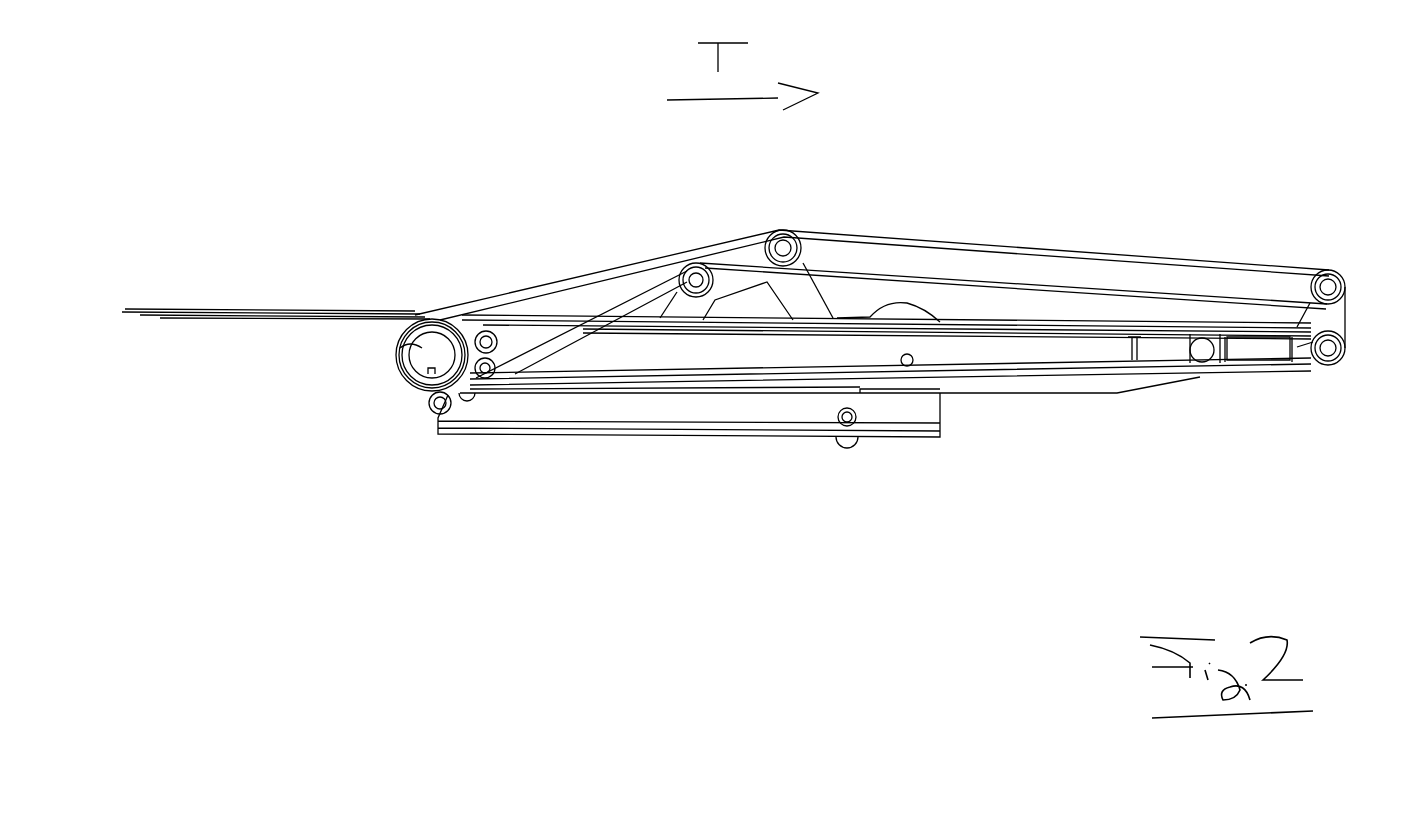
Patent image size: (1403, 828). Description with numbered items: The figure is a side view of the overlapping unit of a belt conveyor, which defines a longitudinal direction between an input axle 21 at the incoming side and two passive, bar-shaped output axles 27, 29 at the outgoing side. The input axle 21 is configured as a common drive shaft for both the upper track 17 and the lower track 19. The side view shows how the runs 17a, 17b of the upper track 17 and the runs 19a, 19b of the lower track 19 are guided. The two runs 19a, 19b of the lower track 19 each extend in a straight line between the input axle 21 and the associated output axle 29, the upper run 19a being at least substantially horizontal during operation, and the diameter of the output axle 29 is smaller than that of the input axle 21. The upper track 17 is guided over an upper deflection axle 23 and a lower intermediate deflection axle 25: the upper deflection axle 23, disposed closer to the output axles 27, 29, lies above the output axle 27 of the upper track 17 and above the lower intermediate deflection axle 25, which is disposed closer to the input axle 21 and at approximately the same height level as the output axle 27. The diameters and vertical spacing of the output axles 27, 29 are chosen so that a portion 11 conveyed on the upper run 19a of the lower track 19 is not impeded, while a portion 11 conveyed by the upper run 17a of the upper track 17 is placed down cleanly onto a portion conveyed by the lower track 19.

The portion 11 is at (207, 307).
The upper track 17 is at (872, 258).
The upper run of the upper track 17a is at (951, 240).
The lower run of the upper track 17b is at (977, 272).
The lower track 19 is at (890, 432).
The upper run of the lower track 19a is at (967, 330).
The lower run of the lower track 19b is at (997, 372).
The input axle 21 is at (397, 358).
The upper deflection axle 23 is at (783, 232).
The lower intermediate deflection axle 25 is at (694, 272).
The output axle 27 is at (1330, 268).
The output axle 29 is at (1328, 365).